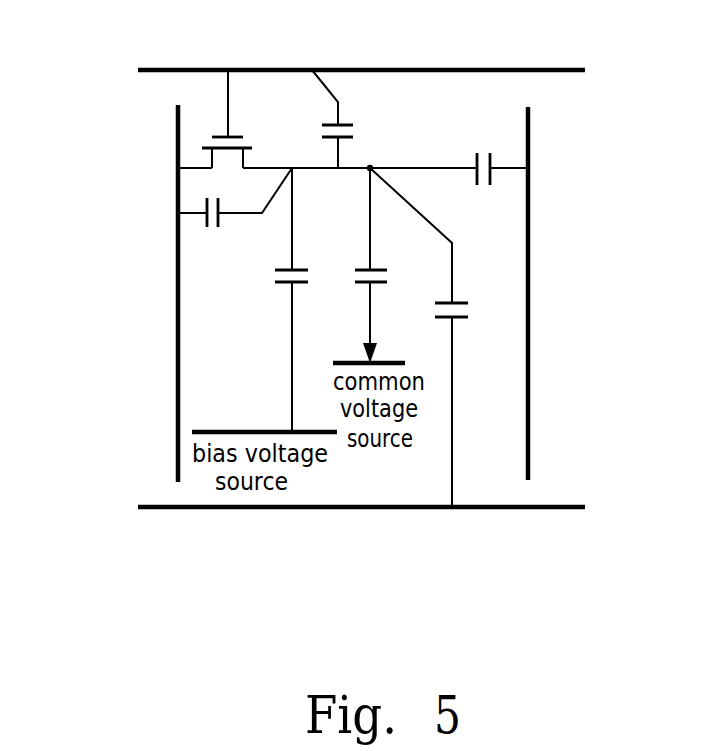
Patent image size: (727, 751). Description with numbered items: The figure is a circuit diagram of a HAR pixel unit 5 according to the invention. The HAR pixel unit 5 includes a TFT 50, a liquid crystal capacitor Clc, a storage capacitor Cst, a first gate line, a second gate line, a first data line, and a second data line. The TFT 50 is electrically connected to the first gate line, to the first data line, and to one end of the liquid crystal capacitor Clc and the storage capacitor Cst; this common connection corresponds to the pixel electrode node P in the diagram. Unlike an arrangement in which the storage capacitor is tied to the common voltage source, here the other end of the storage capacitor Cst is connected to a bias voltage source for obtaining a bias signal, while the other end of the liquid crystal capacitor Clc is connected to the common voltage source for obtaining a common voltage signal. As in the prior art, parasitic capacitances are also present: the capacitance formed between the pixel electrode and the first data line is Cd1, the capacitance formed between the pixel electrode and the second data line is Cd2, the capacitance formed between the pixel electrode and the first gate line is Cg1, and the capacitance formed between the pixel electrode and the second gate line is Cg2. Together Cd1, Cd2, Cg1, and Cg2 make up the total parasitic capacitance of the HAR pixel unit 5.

The TFT 50 is at (200, 125).
The HAR pixel unit 5 is at (645, 296).
The pixel electrode node P is at (376, 153).
The capacitance between the pixel electrode and the Data line 1 Cd1 is at (235, 216).
The capacitance between the pixel electrode and the Data line 2 Cd2 is at (484, 152).
The capacitance between the pixel electrode and the Gate line 1 Cg1 is at (315, 119).
The capacitance between the pixel electrode and the Gate line 2 Cg2 is at (436, 337).
The storage capacitor Cst is at (281, 300).
The liquid crystal capacitor Clc is at (357, 265).